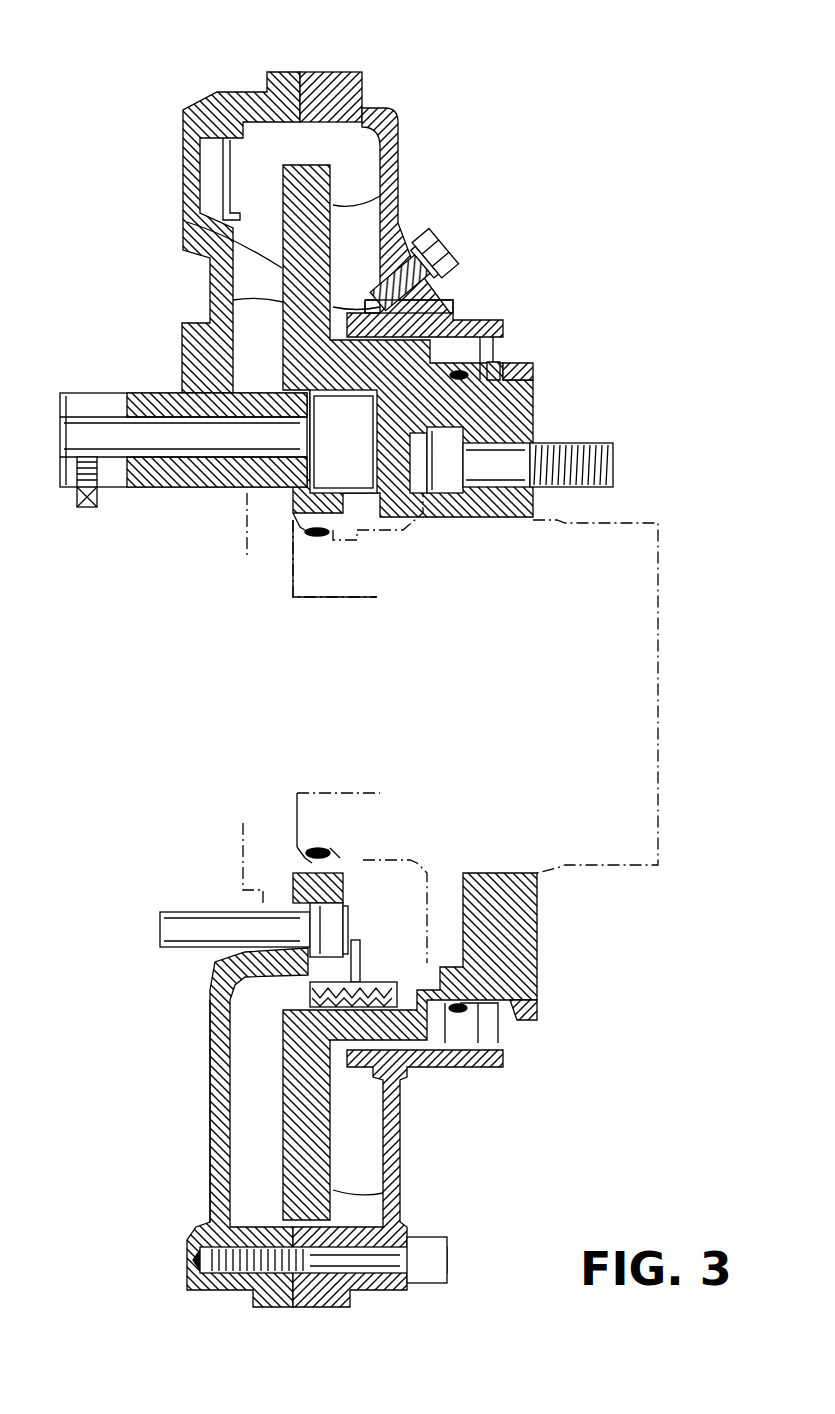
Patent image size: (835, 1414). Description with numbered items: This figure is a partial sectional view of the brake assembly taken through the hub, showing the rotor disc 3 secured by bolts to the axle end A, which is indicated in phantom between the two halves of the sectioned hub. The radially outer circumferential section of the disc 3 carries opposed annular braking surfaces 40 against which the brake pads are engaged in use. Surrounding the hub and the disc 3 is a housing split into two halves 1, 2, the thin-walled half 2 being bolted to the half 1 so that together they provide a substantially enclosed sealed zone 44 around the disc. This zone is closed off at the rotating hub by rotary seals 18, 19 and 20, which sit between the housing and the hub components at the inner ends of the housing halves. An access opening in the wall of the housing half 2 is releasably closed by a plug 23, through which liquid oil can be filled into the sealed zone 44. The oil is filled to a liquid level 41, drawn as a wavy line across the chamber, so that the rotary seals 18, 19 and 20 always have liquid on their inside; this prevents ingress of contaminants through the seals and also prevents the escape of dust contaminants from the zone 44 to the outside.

The housing half 1 is at (290, 71).
The housing half 2 is at (387, 108).
The rotor disc 3 is at (297, 193).
The rotary seal 18 is at (320, 860).
The rotary seal 19 is at (487, 1037).
The rotary seal 20 is at (513, 363).
The plug 23 is at (447, 253).
The annular braking surface 40 is at (183, 217).
The liquid level 41 is at (413, 300).
The sealed zone 44 is at (253, 1112).
The axle end A is at (658, 667).